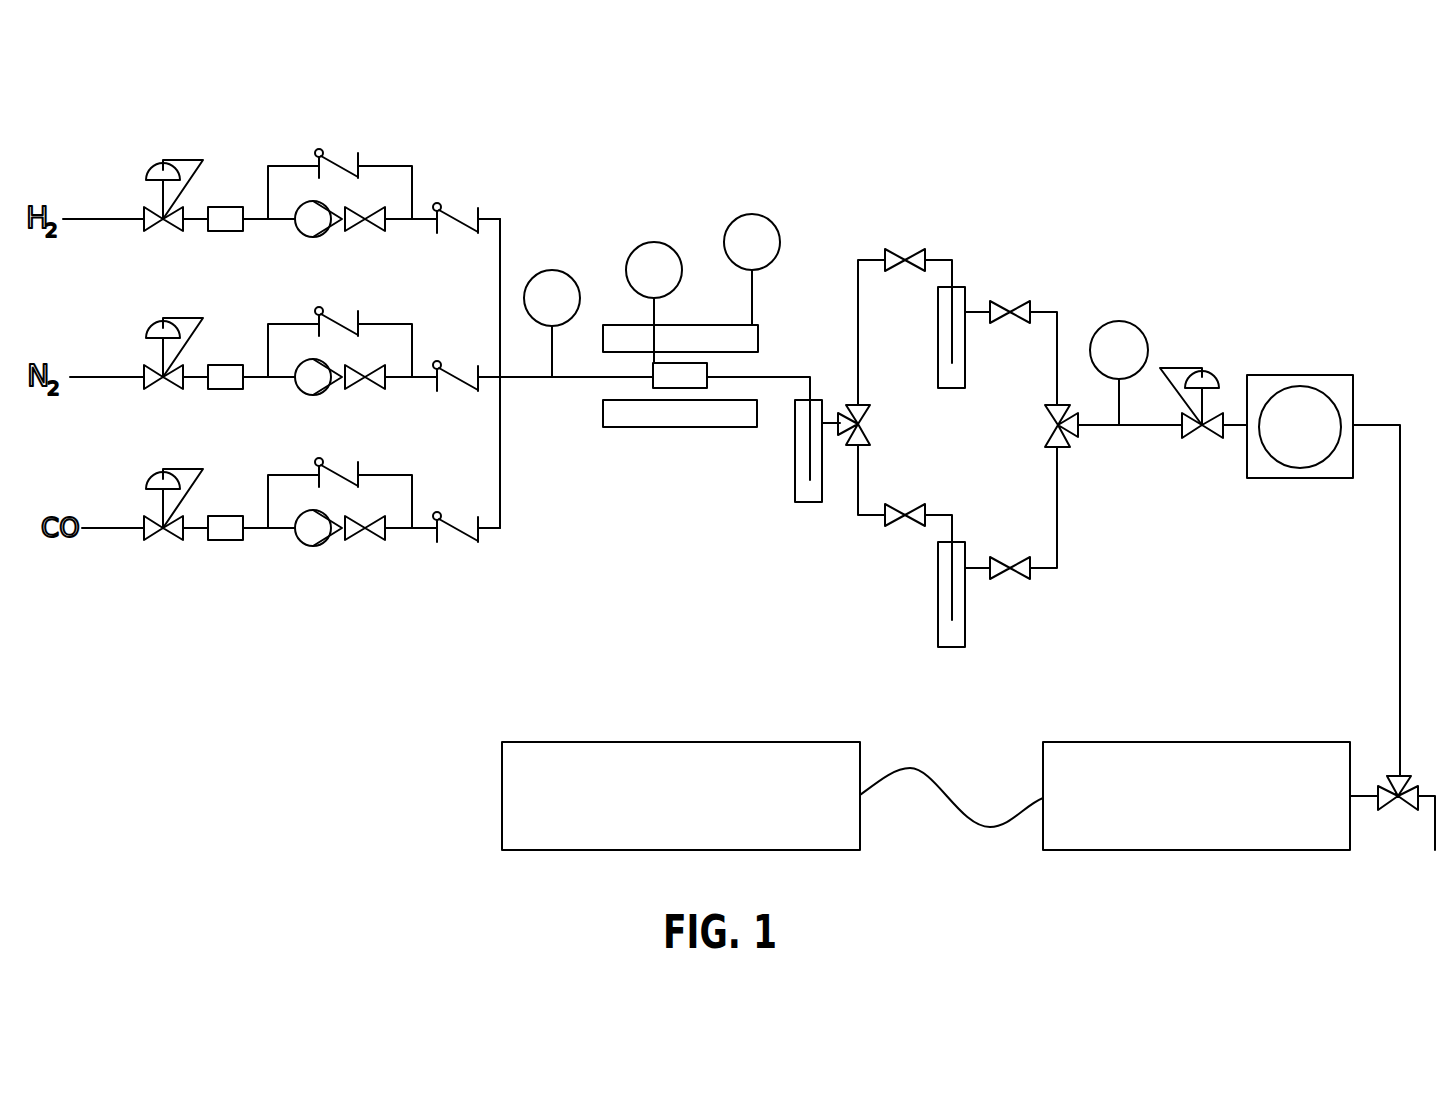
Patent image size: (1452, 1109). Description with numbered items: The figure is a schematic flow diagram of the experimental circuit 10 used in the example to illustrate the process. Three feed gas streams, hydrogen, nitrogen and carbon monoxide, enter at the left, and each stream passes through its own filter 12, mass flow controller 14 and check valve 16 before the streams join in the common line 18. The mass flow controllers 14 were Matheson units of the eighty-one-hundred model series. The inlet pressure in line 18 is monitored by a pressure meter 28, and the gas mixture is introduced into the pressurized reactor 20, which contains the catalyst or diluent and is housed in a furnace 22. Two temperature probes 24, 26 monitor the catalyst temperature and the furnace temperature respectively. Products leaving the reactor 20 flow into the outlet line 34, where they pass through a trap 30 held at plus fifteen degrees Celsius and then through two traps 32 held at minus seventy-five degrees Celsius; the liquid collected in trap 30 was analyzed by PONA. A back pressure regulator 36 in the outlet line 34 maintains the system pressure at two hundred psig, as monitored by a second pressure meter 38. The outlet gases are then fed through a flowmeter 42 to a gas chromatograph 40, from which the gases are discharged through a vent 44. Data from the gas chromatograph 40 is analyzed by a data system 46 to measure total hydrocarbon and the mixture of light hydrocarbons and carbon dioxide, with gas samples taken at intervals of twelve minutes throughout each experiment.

The experimental circuit 10 is at (815, 168).
The filters 12 is at (227, 207).
The mass flow controllers 14 is at (387, 165).
The check valves 16 is at (453, 208).
The line 18 is at (535, 380).
The pressurized reactor 20 is at (682, 388).
The furnace 22 is at (759, 334).
The temperature probe 24 is at (654, 240).
The temperature probe 26 is at (778, 225).
The pressure meter 28 is at (555, 268).
The trap 30 is at (809, 504).
The traps 32 is at (966, 289).
The outlet line 34 is at (1142, 430).
The back pressure regulator 36 is at (1201, 368).
The pressure meter 38 is at (1127, 321).
The gas chromatograph 40 is at (1304, 741).
The flowmeter 42 is at (1336, 374).
The vent 44 is at (1197, 741).
The data system 46 is at (812, 741).